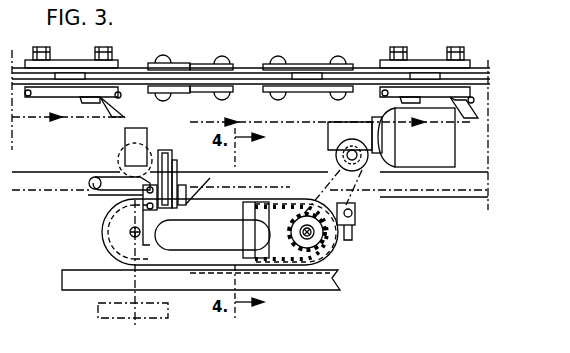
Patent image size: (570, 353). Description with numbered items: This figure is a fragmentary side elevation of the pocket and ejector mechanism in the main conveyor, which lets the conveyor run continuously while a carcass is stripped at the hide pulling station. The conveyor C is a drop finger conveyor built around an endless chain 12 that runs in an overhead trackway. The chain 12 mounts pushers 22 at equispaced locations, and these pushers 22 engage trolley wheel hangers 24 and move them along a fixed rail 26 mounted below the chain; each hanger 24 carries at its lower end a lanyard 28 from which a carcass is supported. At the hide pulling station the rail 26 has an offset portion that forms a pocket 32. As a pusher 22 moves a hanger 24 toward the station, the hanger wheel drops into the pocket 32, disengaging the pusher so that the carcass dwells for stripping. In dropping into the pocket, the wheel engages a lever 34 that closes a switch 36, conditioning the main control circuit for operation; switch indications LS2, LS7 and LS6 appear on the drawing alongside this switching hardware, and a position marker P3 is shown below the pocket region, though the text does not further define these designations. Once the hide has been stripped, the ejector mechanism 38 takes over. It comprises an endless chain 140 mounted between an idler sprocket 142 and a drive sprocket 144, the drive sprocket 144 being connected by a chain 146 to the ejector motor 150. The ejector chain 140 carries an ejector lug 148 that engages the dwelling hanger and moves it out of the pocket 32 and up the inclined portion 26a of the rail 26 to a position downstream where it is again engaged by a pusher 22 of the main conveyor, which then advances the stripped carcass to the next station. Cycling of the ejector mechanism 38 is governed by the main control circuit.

The endless chain 12 is at (249, 68).
The conveyor C is at (193, 55).
The pushers 22 is at (125, 110).
The trolley wheel hangers 24 is at (125, 142).
The fixed rail 26 is at (56, 183).
The inclined portion 26a is at (245, 185).
The lanyards 28 is at (130, 313).
The pocket 32 is at (118, 194).
The lever 34 is at (115, 182).
The switch 36 is at (174, 209).
The ejector mechanism 38 is at (244, 199).
The endless chain 140 is at (286, 264).
The idler sprocket 142 is at (100, 241).
The drive sprocket 144 is at (334, 248).
The chain 146 is at (333, 156).
The ejector lug 148 is at (345, 233).
The ejector motor 150 is at (391, 137).
The limit switch LS2 is at (173, 156).
The limit switch LS7 is at (177, 170).
The limit switch LS6 is at (356, 212).
The position P3 is at (140, 308).